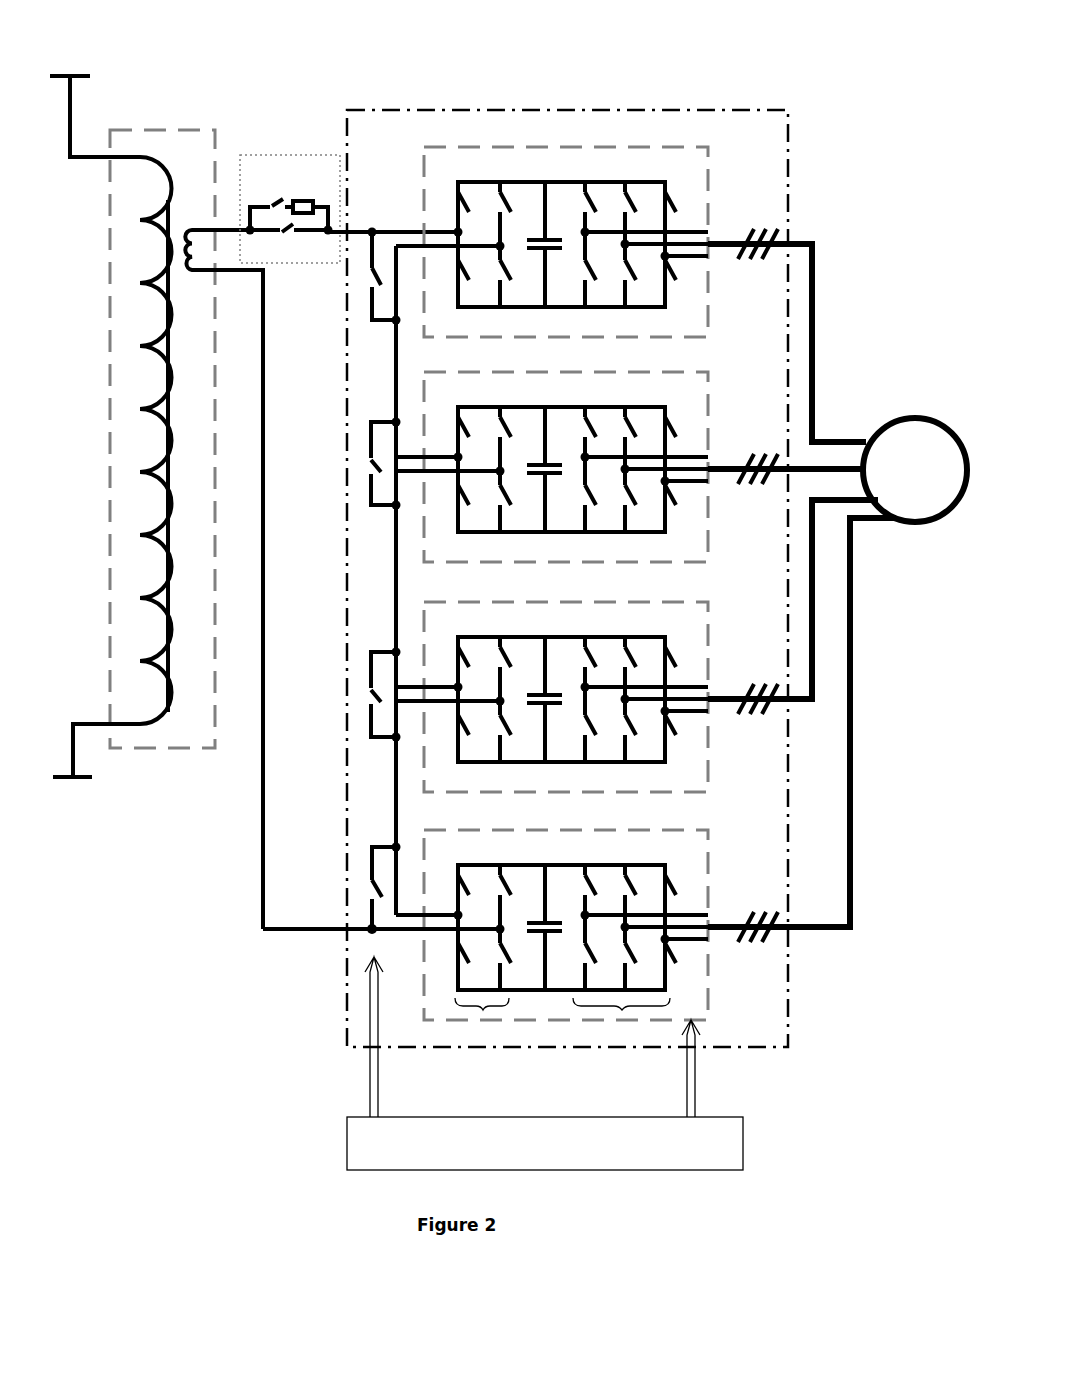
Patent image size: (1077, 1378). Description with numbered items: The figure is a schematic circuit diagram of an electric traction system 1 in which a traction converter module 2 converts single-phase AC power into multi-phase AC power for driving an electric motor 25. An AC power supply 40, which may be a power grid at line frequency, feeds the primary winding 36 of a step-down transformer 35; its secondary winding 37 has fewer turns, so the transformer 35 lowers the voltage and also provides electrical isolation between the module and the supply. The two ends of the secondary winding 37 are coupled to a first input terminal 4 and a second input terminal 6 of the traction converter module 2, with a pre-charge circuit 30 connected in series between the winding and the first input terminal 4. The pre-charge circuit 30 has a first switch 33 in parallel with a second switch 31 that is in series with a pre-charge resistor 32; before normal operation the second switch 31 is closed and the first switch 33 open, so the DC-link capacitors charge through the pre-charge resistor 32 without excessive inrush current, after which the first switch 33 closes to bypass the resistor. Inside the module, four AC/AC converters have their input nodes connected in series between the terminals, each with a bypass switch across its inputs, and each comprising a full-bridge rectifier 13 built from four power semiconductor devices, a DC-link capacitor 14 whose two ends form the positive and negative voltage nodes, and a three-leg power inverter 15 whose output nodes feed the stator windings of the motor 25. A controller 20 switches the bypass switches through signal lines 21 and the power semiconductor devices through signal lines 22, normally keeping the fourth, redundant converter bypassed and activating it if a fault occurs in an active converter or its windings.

The electric traction system 1 is at (810, 68).
The traction converter module 2 is at (553, 110).
The first input terminal 4 is at (353, 226).
The second input terminal 6 is at (367, 934).
The rectifier 13 is at (482, 1012).
The DC-link capacitor 14 is at (557, 937).
The power inverter 15 is at (622, 1012).
The controller 20 is at (743, 1135).
The signal lines 21 is at (369, 1100).
The signal lines 22 is at (696, 1107).
The electric motor 25 is at (913, 416).
The pre-charge circuit 30 is at (262, 154).
The second switch 31 is at (270, 204).
The pre-charge resistor 32 is at (305, 200).
The first switch 33 is at (283, 238).
The step-down transformer 35 is at (143, 129).
The primary winding 36 is at (138, 346).
The secondary winding 37 is at (197, 274).
The AC power supply 40 is at (62, 76).